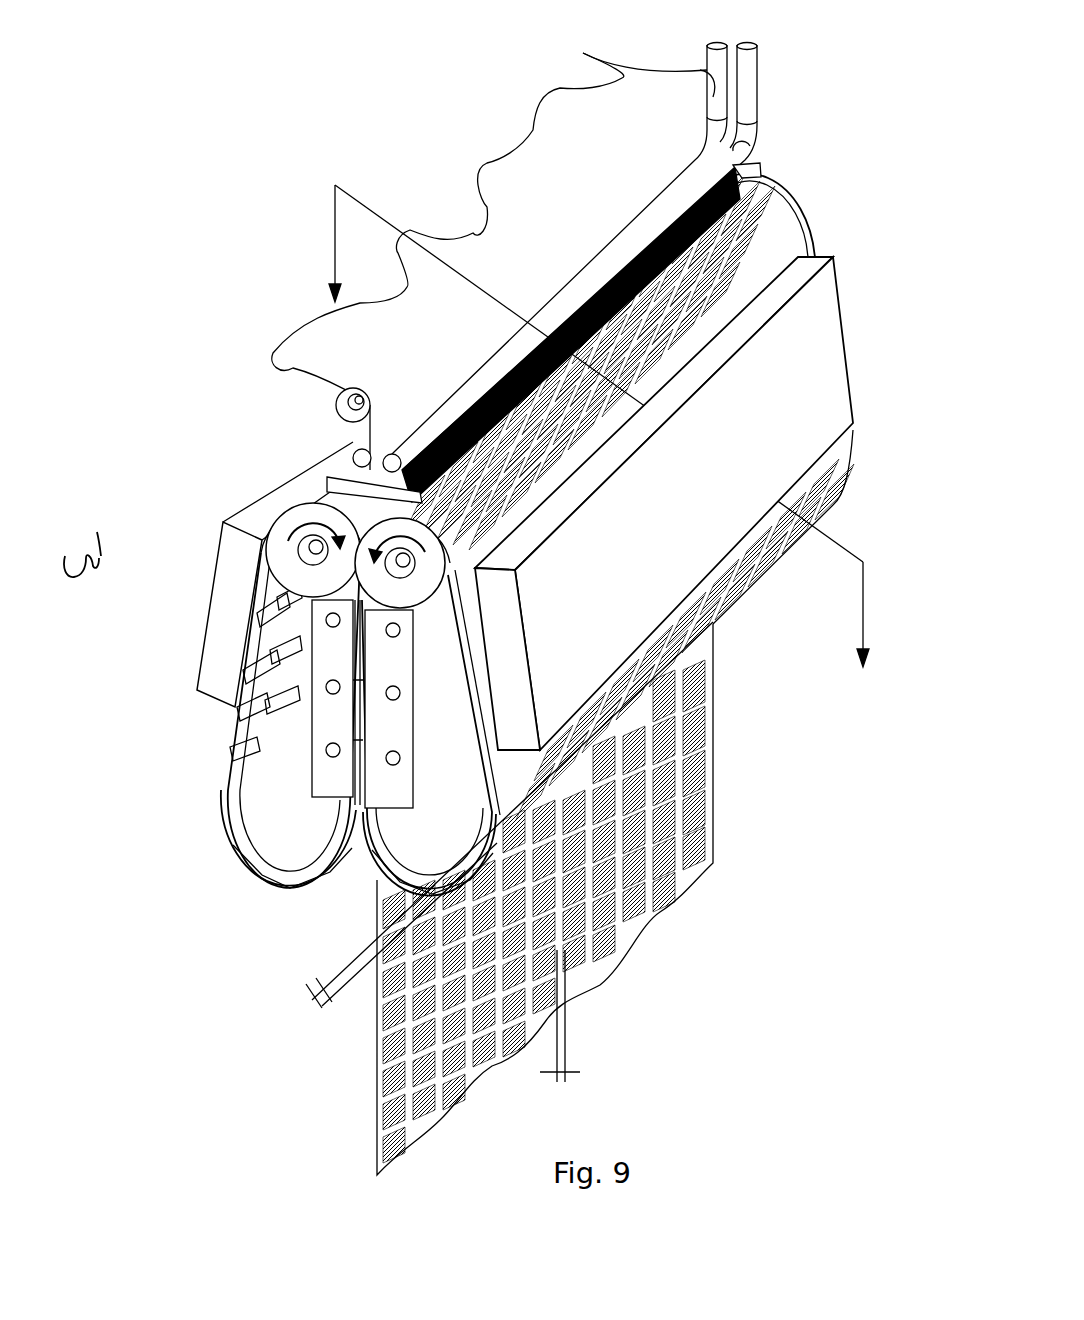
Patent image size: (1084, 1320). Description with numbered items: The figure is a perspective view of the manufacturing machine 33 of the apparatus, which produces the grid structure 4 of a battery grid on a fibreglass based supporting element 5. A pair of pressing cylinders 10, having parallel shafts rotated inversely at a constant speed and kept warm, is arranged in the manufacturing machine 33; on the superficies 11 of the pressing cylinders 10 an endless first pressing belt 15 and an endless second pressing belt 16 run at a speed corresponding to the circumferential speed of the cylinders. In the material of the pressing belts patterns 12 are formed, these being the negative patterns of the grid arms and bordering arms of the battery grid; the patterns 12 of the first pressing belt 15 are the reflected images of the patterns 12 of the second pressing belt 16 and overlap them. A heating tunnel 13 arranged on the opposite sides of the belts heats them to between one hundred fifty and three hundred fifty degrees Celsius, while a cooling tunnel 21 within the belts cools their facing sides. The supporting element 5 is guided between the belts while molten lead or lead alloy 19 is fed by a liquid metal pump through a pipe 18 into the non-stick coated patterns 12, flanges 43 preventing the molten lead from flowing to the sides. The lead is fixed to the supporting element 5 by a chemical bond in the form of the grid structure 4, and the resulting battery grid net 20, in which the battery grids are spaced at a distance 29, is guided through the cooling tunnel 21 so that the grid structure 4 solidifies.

The grid structure 4 is at (717, 745).
The fibreglass based supporting element 5 is at (560, 177).
The pressing cylinders 10 is at (293, 572).
The superficies 11 is at (460, 580).
The patterns 12 is at (787, 240).
The heating tunnel 13 is at (770, 398).
The first pressing belt 15 is at (233, 777).
The second pressing belt 16 is at (487, 807).
The pipe 18 is at (750, 148).
The molten lead or lead alloy 19 is at (330, 505).
The battery grid net 20 is at (375, 1053).
The cooling tunnel 21 is at (300, 838).
The distance 29 is at (318, 1003).
The manufacturing machine 33 is at (362, 149).
The flanges 43 is at (742, 175).